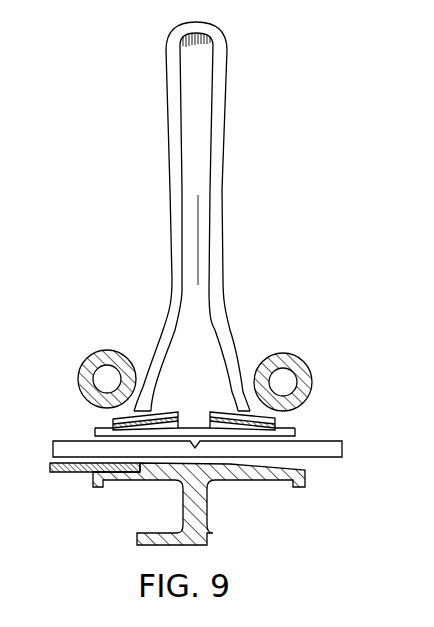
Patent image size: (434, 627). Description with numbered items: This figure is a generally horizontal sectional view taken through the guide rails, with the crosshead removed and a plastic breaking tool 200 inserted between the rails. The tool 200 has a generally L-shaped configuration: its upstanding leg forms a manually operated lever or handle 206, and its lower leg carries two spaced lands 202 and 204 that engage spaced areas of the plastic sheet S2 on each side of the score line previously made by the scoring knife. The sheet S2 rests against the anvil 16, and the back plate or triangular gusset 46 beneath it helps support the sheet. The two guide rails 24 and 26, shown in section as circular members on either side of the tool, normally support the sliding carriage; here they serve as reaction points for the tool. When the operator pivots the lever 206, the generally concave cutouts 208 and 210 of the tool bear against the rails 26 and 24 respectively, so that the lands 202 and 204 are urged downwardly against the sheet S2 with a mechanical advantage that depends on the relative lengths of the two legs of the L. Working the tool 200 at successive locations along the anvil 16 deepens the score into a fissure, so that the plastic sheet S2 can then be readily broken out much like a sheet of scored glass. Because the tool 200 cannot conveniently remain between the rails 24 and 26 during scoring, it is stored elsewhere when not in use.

The breaking tool 200 is at (222, 180).
The lever 206 is at (226, 98).
The guide rail 26 is at (107, 350).
The guide rail 24 is at (285, 353).
The concave cutout 208 is at (127, 399).
The concave cutout 210 is at (256, 397).
The land 202 is at (152, 431).
The land 204 is at (241, 431).
The plastic sheet S2 is at (331, 441).
The back plate or triangular gusset 46 is at (78, 473).
The anvil 16 is at (209, 534).